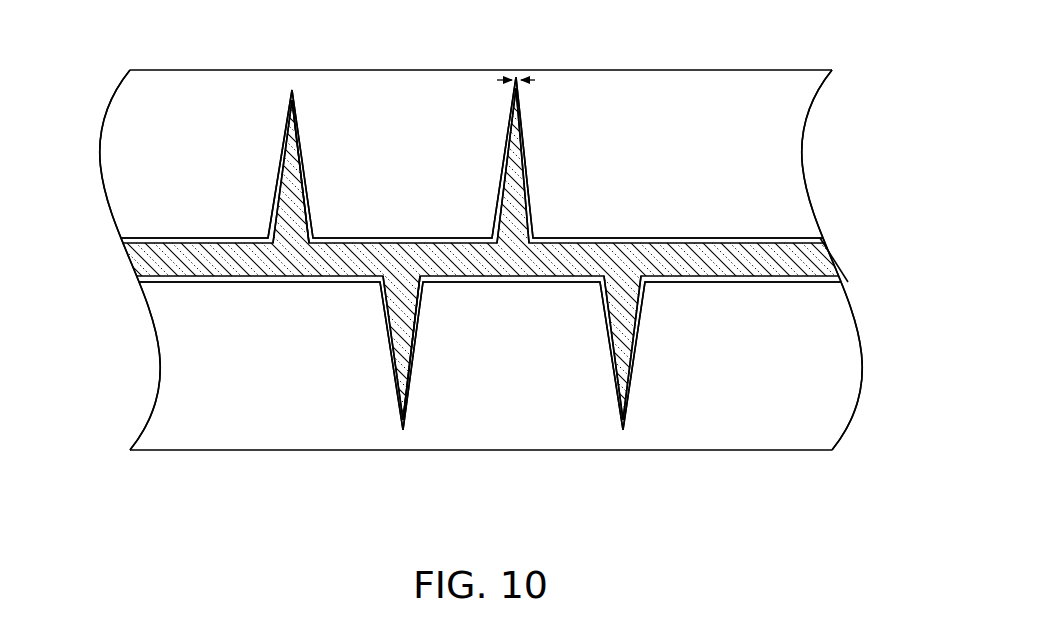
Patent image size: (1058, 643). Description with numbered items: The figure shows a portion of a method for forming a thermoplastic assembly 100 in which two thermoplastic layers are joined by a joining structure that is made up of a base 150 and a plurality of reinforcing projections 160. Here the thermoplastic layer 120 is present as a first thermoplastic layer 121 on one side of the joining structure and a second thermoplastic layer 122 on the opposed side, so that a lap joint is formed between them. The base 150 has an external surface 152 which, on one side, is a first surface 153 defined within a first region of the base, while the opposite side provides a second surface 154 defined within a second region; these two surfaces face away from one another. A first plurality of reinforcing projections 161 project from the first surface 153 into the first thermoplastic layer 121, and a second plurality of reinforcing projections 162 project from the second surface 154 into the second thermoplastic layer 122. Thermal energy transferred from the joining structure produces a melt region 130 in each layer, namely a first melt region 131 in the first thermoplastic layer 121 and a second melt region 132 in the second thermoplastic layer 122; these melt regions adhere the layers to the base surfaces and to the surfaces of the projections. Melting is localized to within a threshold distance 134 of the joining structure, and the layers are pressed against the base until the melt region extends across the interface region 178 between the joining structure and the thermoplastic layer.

The thermoplastic assembly 100 is at (200, 500).
The thermoplastic layer 120 is at (115, 92).
The first thermoplastic layer 121 is at (100, 122).
The second thermoplastic layer 122 is at (158, 390).
The melt region 130 is at (628, 237).
The first melt region 131 is at (683, 237).
The second melt region 132 is at (777, 283).
The threshold distance 134 is at (518, 72).
The base 150 is at (842, 257).
The external surface of base 152 is at (178, 238).
The first surface of base 153 is at (153, 240).
The second surface of base 154 is at (175, 278).
The reinforcing projections 160 is at (282, 153).
The first plurality of reinforcing projections 161 is at (303, 140).
The second plurality of reinforcing projections 162 is at (417, 378).
The interface region 178 is at (822, 238).